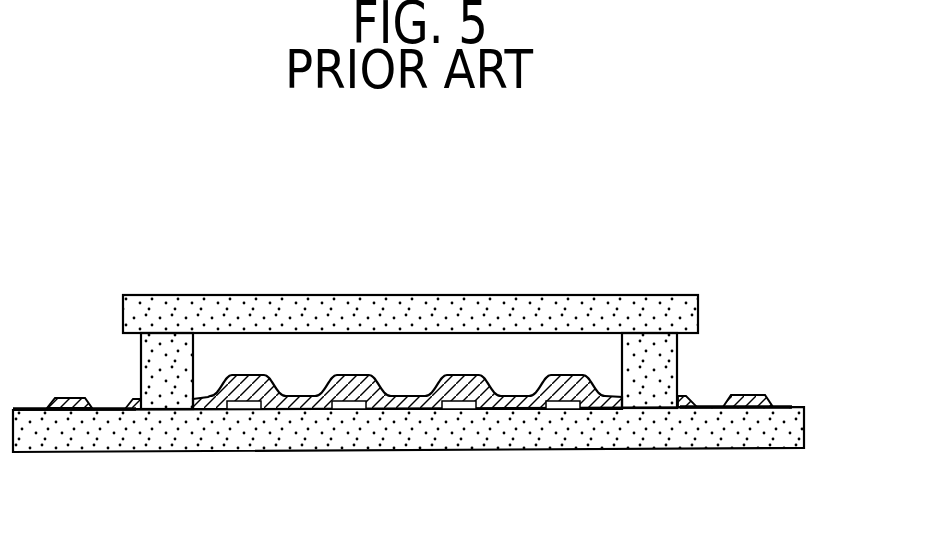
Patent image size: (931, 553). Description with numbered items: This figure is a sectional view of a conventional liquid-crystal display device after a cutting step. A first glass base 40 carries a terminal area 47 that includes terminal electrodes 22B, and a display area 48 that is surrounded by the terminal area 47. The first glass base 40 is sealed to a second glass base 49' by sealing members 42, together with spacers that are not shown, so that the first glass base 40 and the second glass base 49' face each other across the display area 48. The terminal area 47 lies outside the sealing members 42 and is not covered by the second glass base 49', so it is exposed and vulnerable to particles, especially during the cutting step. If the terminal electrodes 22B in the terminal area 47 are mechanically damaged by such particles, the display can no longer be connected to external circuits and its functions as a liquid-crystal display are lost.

The first glass base 40 is at (797, 427).
The second glass base 49' is at (410, 264).
The sealing member 42 is at (172, 357).
The display area 48 is at (193, 465).
The terminal electrode 22B is at (107, 408).
The terminal area 47 is at (137, 467).